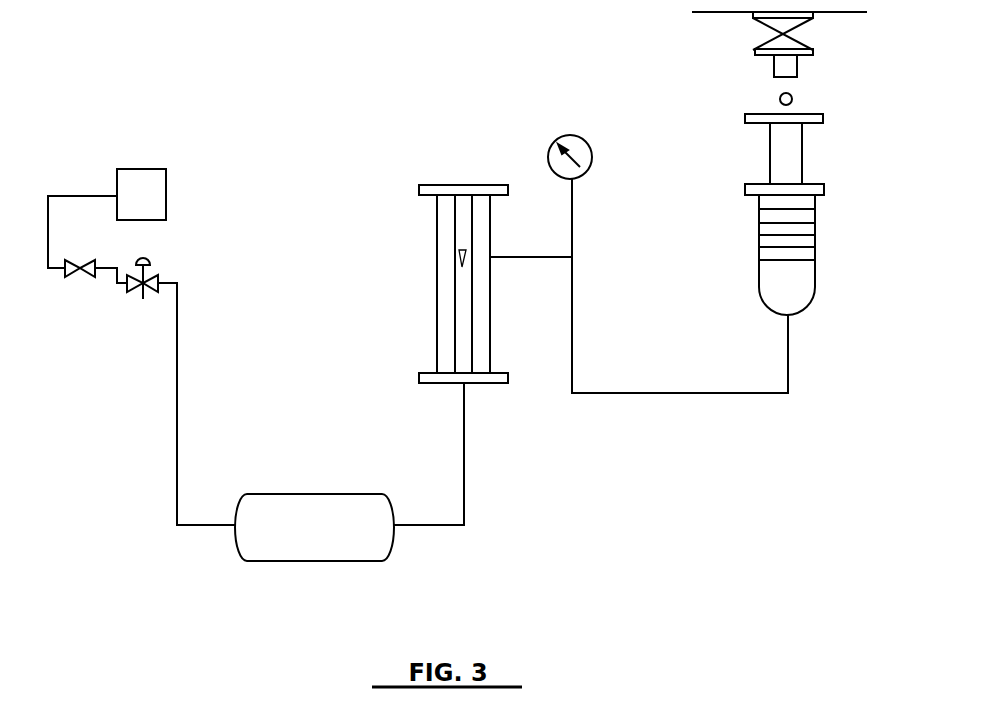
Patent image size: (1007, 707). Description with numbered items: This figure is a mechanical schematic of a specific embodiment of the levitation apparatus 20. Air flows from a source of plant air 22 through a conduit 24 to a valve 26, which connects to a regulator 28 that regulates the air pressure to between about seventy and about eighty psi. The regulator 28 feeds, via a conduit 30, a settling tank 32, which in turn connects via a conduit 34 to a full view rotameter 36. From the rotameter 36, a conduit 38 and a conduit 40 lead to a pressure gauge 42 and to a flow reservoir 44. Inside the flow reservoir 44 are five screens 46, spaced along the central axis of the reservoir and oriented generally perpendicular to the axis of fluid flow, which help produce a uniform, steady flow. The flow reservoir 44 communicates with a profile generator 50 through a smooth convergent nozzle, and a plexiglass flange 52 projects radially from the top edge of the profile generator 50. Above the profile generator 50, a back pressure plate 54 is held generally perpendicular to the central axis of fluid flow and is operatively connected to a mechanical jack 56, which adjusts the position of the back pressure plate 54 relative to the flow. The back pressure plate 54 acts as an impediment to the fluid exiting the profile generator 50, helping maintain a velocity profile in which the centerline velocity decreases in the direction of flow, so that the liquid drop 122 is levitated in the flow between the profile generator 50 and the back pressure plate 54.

The levitation apparatus 20 is at (329, 180).
The source of plant air 22 is at (125, 203).
The conduit 24 is at (58, 272).
The valve 26 is at (90, 275).
The regulator 28 is at (130, 297).
The conduit 30 is at (177, 442).
The settling tank 32 is at (290, 561).
The conduit 34 is at (464, 474).
The rotameter 36 is at (437, 282).
The conduit 38 is at (532, 257).
The conduit 40 is at (573, 322).
The pressure gauge 42 is at (594, 139).
The flow reservoir 44 is at (817, 284).
The screens 46 is at (788, 220).
The profile generator 50 is at (795, 155).
The plexiglass flange 52 is at (823, 118).
The back pressure plate 54 is at (790, 68).
The mechanical jack 56 is at (768, 31).
The liquid drop 122 is at (778, 98).